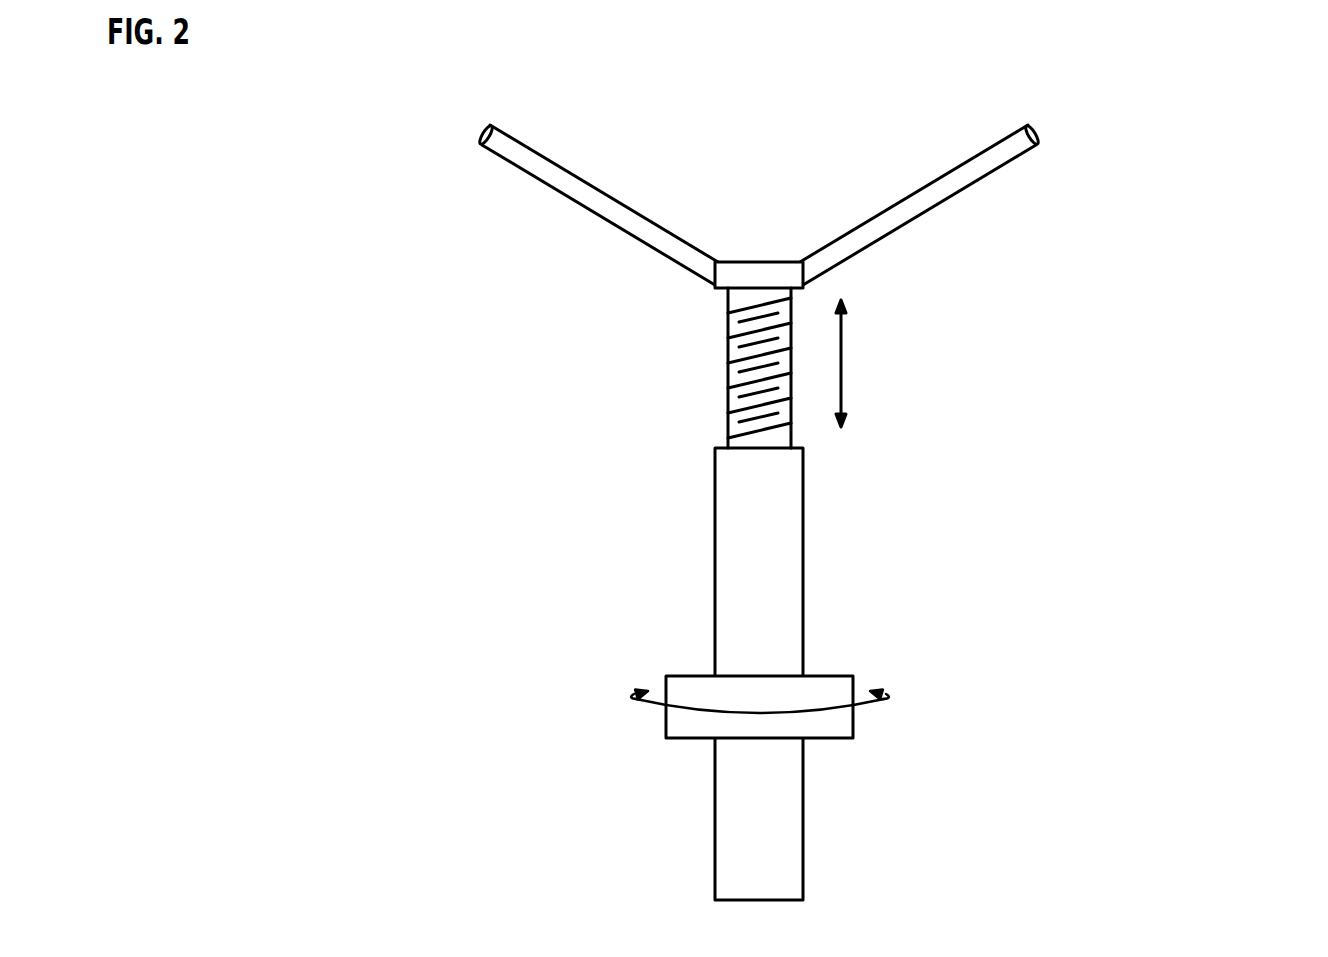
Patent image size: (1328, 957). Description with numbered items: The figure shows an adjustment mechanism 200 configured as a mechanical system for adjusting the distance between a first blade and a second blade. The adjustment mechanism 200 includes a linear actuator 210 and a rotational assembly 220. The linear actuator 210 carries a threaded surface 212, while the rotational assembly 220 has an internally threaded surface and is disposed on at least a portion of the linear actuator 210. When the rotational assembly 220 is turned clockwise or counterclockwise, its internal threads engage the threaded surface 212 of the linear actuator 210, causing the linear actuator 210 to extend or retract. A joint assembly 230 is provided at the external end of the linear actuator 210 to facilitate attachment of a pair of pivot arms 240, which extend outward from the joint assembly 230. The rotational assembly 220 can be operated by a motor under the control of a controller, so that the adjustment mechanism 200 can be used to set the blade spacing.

The adjustment mechanism 200 is at (1303, 72).
The linear actuator 210 is at (706, 368).
The threaded surface 212 is at (737, 351).
The rotational assembly 220 is at (667, 737).
The joint assembly 230 is at (760, 262).
The pivot arms 240 is at (540, 180).